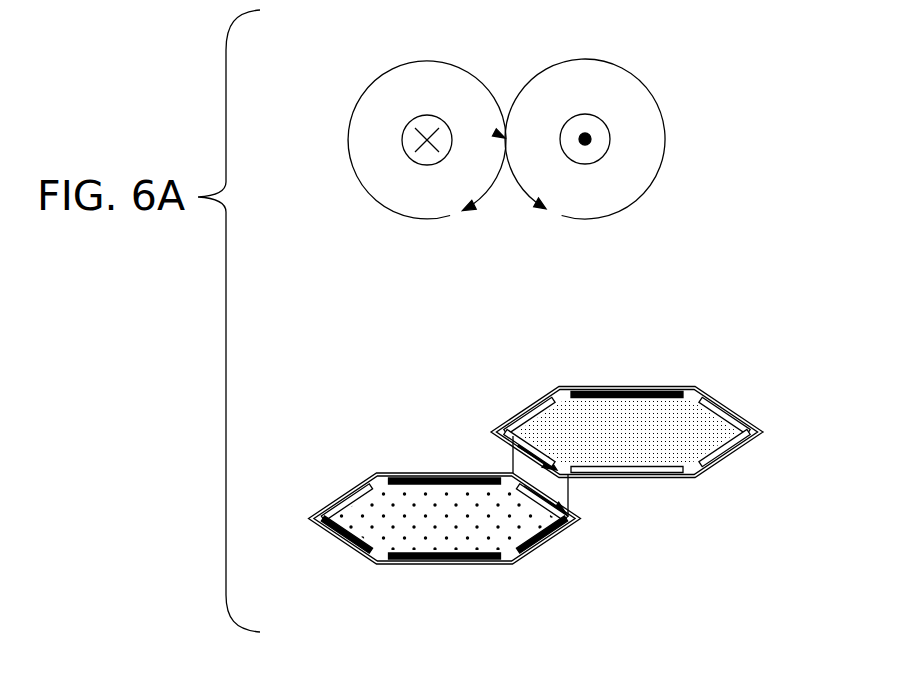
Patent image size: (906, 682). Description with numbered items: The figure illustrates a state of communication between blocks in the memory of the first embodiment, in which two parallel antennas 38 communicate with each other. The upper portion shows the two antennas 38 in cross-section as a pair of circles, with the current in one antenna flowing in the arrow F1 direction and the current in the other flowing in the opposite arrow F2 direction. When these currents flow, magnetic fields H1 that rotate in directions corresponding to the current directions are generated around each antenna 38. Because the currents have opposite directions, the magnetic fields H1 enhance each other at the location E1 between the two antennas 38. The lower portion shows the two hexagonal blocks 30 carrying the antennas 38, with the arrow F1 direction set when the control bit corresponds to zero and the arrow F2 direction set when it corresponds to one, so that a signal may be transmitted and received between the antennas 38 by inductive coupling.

The magnetic field H1 is at (350, 117).
The arrow F1 direction F1 is at (402, 142).
The arrow F2 direction F2 is at (610, 147).
The location between the two antennas E1 is at (495, 133).
The hexagonal tile 30 is at (348, 488).
The antenna 38 is at (514, 488).